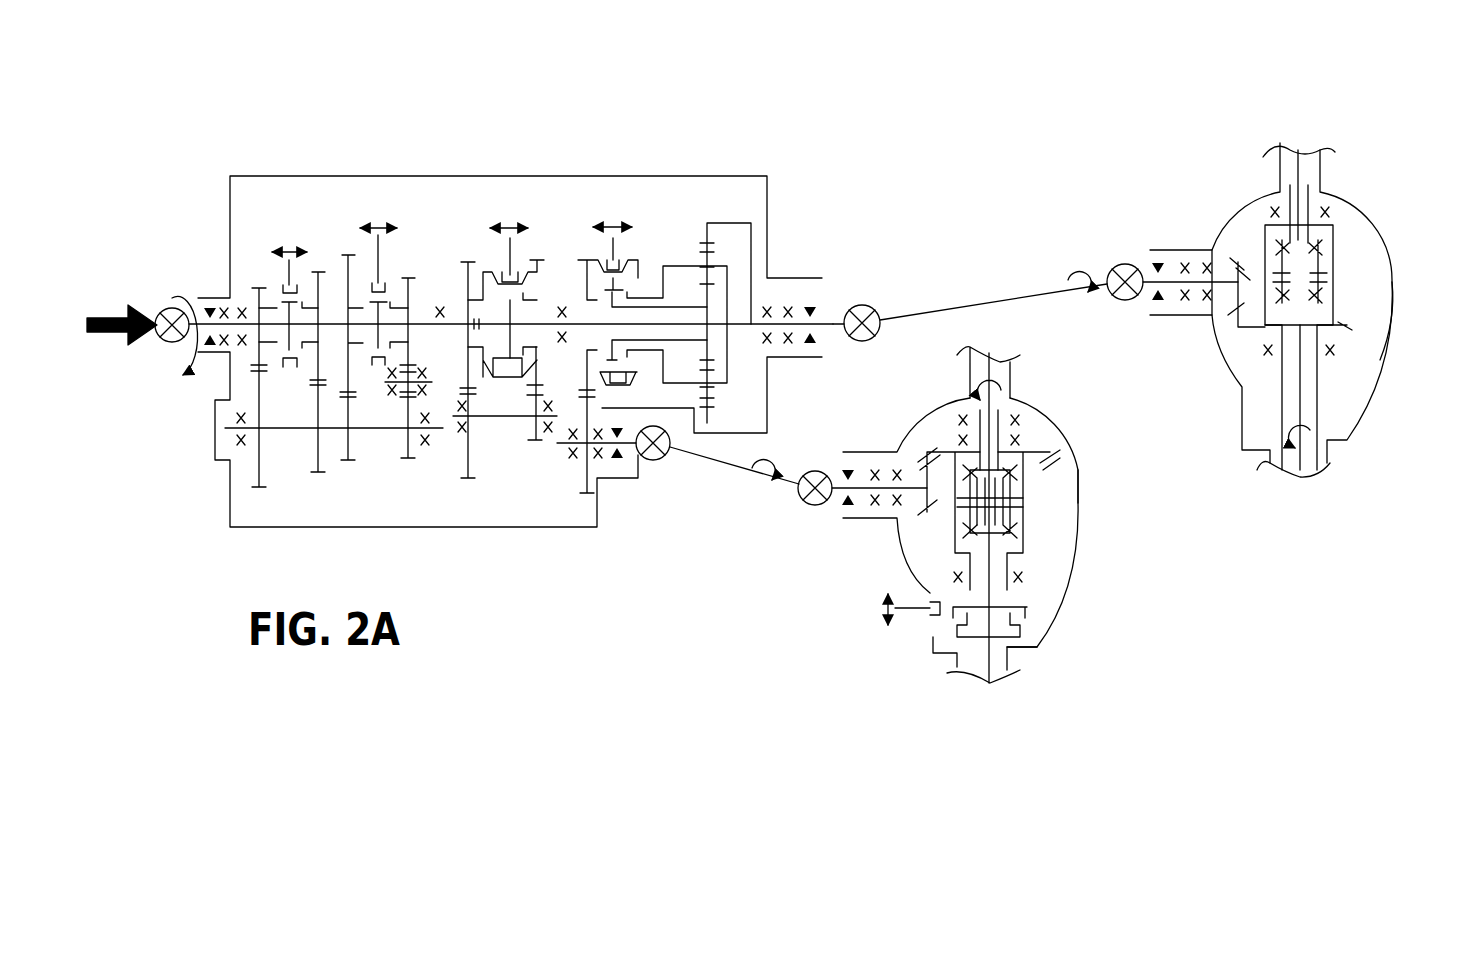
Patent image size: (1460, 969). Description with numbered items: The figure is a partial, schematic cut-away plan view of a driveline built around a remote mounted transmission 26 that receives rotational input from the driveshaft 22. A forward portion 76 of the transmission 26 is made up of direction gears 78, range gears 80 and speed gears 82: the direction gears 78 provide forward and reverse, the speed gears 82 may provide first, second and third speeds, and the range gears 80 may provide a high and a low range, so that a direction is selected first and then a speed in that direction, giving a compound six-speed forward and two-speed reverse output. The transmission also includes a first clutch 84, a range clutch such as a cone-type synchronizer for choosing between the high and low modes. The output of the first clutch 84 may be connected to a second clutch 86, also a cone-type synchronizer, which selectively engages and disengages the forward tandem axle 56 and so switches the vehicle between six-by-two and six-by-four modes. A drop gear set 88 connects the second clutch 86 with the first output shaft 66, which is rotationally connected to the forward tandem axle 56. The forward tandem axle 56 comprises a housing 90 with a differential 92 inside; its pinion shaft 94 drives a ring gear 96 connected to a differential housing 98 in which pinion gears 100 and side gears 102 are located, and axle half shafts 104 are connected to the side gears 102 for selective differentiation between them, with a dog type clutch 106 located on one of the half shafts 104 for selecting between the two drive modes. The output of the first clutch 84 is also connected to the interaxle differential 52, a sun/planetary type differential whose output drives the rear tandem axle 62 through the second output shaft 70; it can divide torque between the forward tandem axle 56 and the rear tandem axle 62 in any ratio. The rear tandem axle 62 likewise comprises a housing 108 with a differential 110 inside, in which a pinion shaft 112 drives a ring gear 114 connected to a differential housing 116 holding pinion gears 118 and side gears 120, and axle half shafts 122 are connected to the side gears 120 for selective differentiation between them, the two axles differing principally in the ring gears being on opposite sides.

The driveshaft 22 is at (104, 314).
The transmission 26 is at (380, 176).
The interaxle differential 52 is at (737, 210).
The forward tandem axle 56 is at (823, 557).
The rear tandem axle 62 is at (1365, 438).
The first output shaft 66 is at (746, 470).
The second output shaft 70 is at (935, 312).
The forward portion 76 is at (373, 112).
The direction gears 78 is at (330, 202).
The range gears 80 is at (507, 183).
The speed gears 82 is at (270, 502).
The first clutch 84 is at (500, 388).
The second clutch 86 is at (620, 203).
The drop gear set 88 is at (558, 437).
The housing 90 is at (1085, 437).
The differential 92 is at (1057, 552).
The pinion shaft 94 is at (862, 482).
The ring gear 96 is at (945, 448).
The differential housing 98 is at (977, 527).
The pinion gears 100 is at (1007, 513).
The side gears 102 is at (980, 530).
The axle half shafts 104 is at (1010, 378).
The dog type clutch 106 is at (880, 608).
The housing 108 is at (1390, 253).
The differential 110 is at (1335, 300).
The pinion shaft 112 is at (1228, 273).
The ring gear 114 is at (1245, 327).
The differential housing 116 is at (1338, 283).
The pinion gears 118 is at (1320, 292).
The side gears 120 is at (1318, 232).
The axle half shafts 122 is at (1300, 165).